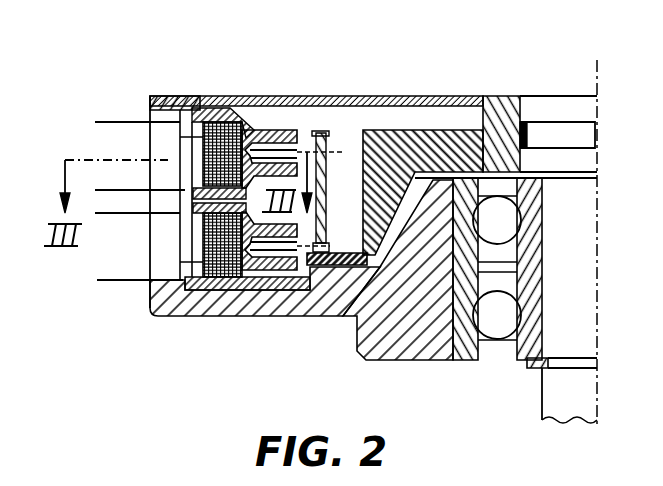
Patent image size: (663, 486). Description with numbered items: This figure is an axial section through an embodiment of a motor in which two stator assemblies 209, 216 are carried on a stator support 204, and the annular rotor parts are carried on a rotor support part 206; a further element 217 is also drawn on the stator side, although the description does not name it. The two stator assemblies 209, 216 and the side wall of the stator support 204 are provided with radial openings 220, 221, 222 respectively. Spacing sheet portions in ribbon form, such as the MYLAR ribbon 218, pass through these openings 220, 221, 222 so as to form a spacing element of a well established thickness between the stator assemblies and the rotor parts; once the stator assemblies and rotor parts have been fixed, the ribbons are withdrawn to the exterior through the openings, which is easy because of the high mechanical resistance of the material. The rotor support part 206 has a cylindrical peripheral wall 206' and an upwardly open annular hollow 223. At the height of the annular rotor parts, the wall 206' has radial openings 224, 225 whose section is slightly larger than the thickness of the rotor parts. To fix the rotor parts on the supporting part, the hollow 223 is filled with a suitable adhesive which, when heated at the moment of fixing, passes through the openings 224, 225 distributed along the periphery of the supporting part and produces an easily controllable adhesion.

The stator support 204 is at (421, 347).
The rotor support part 206 is at (531, 109).
The cylindrical peripheral wall 206' is at (396, 264).
The stator assembly 209 is at (218, 300).
The stator assembly 216 is at (266, 118).
The bobbin flange 217 is at (203, 97).
The MYLAR ribbon 218 is at (123, 193).
The radial opening 220 is at (187, 263).
The radial opening 221 is at (178, 133).
The radial opening 222 is at (157, 138).
The annular hollow 223 is at (345, 150).
The radial opening 224 is at (309, 97).
The radial opening 225 is at (307, 300).